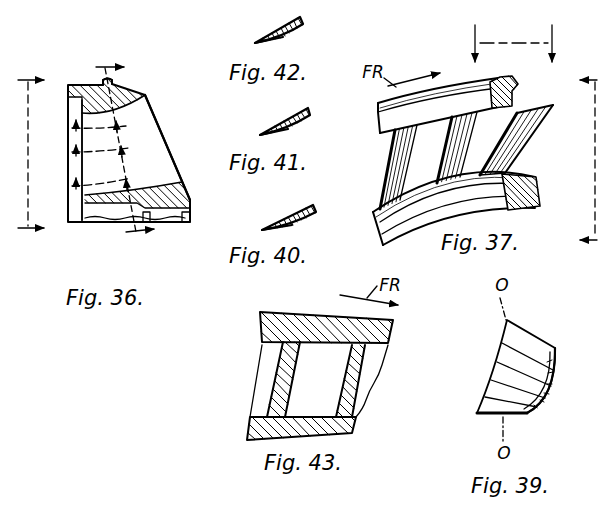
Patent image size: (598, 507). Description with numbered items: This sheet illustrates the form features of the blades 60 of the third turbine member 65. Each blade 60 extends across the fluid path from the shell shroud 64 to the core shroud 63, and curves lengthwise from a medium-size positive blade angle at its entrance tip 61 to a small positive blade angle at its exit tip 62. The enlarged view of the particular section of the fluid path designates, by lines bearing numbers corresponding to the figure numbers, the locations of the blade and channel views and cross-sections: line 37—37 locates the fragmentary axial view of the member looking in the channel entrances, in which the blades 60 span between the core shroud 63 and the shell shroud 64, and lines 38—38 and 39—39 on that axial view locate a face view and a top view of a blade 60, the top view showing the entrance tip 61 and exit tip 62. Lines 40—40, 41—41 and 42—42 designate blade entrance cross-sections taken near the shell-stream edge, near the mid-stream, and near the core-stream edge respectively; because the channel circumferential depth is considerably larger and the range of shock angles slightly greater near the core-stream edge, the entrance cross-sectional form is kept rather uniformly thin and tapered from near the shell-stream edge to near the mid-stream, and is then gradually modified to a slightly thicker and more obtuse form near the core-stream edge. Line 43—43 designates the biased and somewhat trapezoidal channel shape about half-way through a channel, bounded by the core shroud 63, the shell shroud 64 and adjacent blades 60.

In FIG. 36, the section line 37- 37 is at (30, 153).
In FIG. 37, the section line 38- 38 is at (589, 159).
In FIG. 37, the section line 39- 39 is at (512, 43).
In FIG. 36, the section line 40- 40 is at (101, 180).
In FIG. 36, the section line 41- 41 is at (98, 154).
In FIG. 36, the section line 42- 42 is at (96, 128).
In FIG. 36, the section line 43- 43 is at (121, 149).
In FIG. 36, the blade 60 is at (160, 132).
In FIG. 42, the blade 60 is at (302, 26).
In FIG. 41, the blade 60 is at (309, 117).
In FIG. 40, the blade 60 is at (314, 213).
In FIG. 37, the blade 60 is at (521, 142).
In FIG. 43, the blade 60 is at (352, 361).
In FIG. 39, the blade 60 is at (532, 376).
In FIG. 36, the entrance tip 61 is at (86, 164).
In FIG. 42, the entrance tip 61 is at (257, 44).
In FIG. 41, the entrance tip 61 is at (262, 136).
In FIG. 40, the entrance tip 61 is at (264, 230).
In FIG. 37, the entrance tip 61 is at (506, 149).
In FIG. 39, the entrance tip 61 is at (517, 416).
In FIG. 36, the exit tip 62 is at (170, 152).
In FIG. 37, the exit tip 62 is at (546, 121).
In FIG. 39, the exit tip 62 is at (543, 336).
In FIG. 36, the core shroud 63 is at (148, 100).
In FIG. 37, the core shroud 63 is at (513, 101).
In FIG. 43, the core shroud 63 is at (275, 328).
In FIG. 36, the shell shroud 64 is at (186, 186).
In FIG. 37, the shell shroud 64 is at (537, 190).
In FIG. 43, the shell shroud 64 is at (266, 430).
In FIG. 36, the third turbine member 65 is at (128, 90).